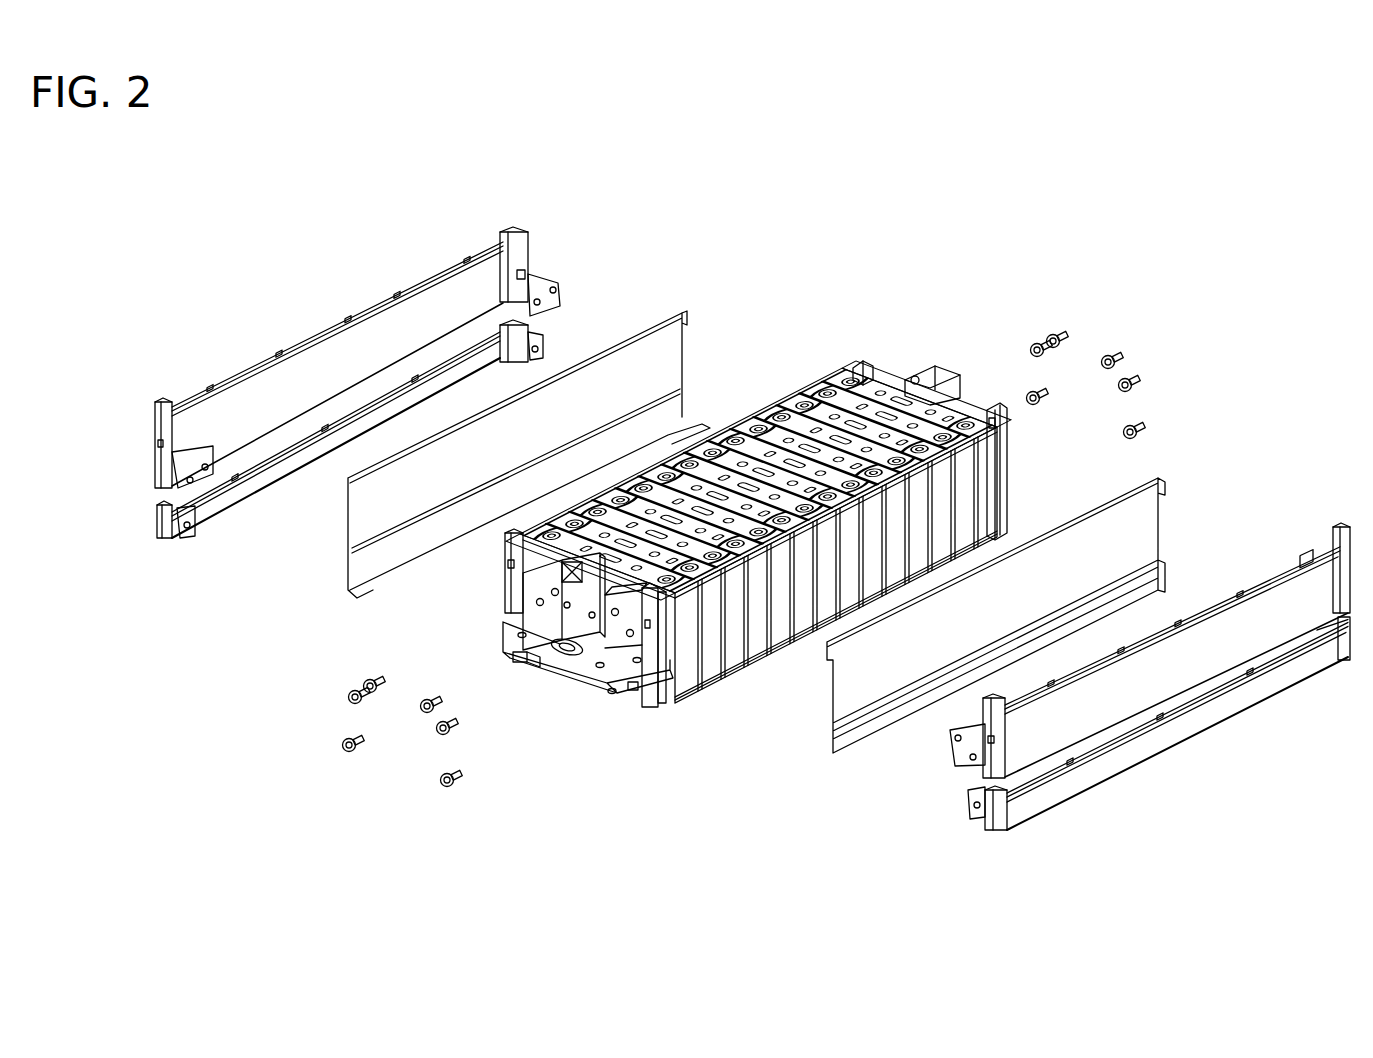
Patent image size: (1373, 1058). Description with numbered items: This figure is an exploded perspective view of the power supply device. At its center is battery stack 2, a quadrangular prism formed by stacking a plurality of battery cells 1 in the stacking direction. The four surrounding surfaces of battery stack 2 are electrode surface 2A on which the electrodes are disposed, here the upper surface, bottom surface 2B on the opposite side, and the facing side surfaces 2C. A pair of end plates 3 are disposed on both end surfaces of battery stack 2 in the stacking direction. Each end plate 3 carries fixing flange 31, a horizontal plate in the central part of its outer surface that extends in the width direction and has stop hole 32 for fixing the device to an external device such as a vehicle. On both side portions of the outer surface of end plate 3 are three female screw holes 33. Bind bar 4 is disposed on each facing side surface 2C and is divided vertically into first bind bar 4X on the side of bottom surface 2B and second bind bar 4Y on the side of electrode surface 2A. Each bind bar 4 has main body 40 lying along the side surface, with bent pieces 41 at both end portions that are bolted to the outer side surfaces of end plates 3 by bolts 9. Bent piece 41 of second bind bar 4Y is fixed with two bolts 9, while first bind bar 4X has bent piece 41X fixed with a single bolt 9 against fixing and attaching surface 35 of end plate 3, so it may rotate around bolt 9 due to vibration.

The battery cell 1 is at (685, 665).
The battery stack 2 is at (800, 383).
The electrode surface 2A is at (758, 463).
The bottom surface 2B is at (758, 668).
The facing side surface 2C is at (872, 555).
The end plate 3 is at (577, 612).
The bind bar 4 is at (430, 195).
The first bind bar 4X is at (337, 400).
The second bind bar 4Y is at (267, 345).
The bolt 9 is at (1117, 357).
The fixing flange 31 is at (517, 655).
The stop hole 32 is at (503, 629).
The female screw hole 33 is at (628, 636).
The fixing and attaching surface 35 is at (634, 688).
The main body 40 is at (458, 292).
The bent piece 41 is at (543, 283).
The bent piece fixed with a single bolt 41X is at (550, 350).